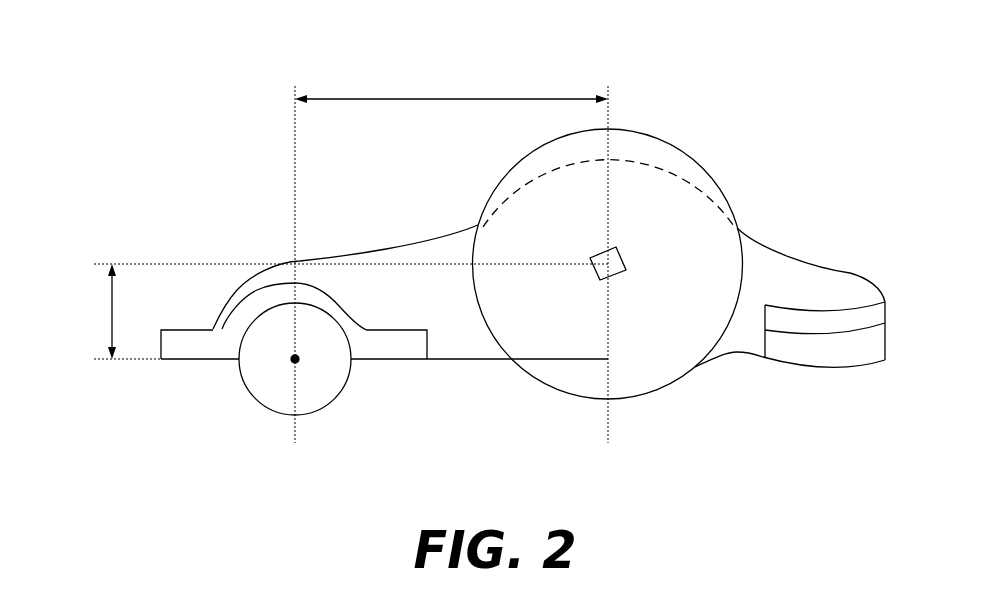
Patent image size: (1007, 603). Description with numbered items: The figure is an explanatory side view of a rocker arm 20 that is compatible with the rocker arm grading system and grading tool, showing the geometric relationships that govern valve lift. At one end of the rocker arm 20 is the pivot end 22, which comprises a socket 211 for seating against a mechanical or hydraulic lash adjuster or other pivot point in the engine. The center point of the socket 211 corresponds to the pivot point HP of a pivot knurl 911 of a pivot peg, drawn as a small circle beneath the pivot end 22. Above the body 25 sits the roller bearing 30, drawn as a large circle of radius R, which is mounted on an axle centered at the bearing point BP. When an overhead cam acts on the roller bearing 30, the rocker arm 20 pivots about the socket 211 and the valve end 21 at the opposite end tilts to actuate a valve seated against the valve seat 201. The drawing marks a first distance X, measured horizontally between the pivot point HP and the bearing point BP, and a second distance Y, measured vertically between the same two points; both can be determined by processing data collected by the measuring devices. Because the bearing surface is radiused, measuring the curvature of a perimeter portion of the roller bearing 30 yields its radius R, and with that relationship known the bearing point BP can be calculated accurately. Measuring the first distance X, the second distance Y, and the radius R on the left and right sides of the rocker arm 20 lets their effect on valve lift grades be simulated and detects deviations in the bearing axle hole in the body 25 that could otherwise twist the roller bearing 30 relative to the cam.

The rocker arm 20 is at (86, 84).
The pivot end 22 is at (250, 280).
The socket 211 is at (338, 312).
The pivot knurl 911 is at (268, 410).
The pivot point HP is at (298, 362).
The roller bearing 30 is at (724, 190).
The bearing point BP is at (617, 275).
The body 25 is at (770, 243).
The valve end 21 is at (873, 283).
The valve seat 201 is at (837, 335).
The first distance X is at (462, 97).
The second distance Y is at (112, 310).
The radius R is at (680, 132).